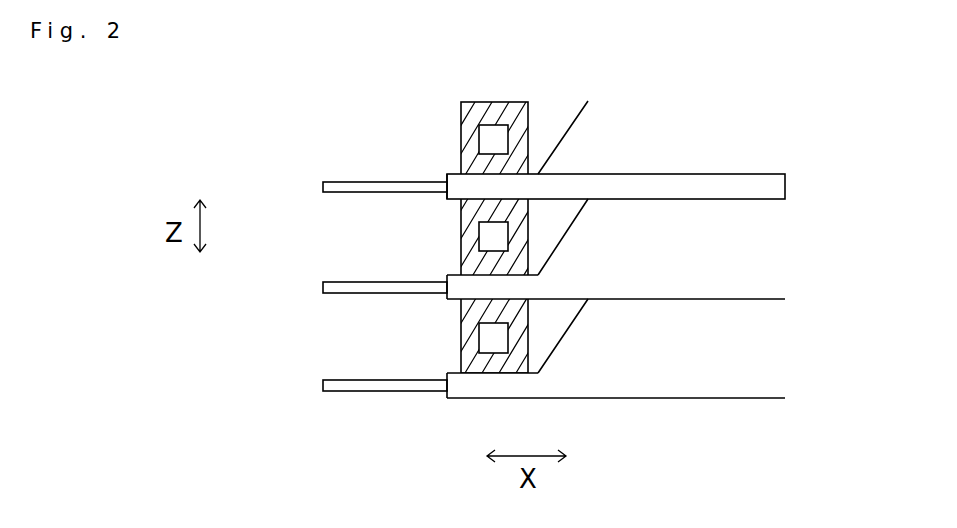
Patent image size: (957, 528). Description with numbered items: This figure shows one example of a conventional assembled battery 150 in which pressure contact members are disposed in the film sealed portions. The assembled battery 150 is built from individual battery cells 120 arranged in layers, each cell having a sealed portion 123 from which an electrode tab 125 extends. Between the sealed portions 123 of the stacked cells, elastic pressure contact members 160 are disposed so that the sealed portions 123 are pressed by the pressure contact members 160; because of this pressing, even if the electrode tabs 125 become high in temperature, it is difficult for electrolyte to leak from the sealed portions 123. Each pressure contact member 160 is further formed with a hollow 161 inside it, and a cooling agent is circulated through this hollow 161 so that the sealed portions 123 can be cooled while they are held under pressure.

The pressure contact member 160 is at (475, 101).
The hollow 161 is at (486, 141).
The battery cell 120 is at (712, 152).
The electrode tab 125 is at (348, 183).
The sealed portion 123 is at (462, 285).
The assembled battery 150 is at (767, 484).